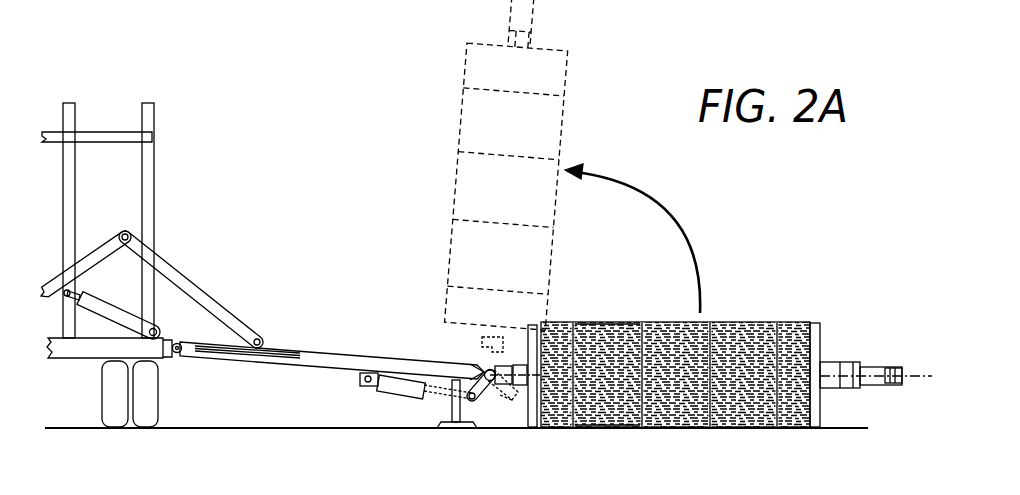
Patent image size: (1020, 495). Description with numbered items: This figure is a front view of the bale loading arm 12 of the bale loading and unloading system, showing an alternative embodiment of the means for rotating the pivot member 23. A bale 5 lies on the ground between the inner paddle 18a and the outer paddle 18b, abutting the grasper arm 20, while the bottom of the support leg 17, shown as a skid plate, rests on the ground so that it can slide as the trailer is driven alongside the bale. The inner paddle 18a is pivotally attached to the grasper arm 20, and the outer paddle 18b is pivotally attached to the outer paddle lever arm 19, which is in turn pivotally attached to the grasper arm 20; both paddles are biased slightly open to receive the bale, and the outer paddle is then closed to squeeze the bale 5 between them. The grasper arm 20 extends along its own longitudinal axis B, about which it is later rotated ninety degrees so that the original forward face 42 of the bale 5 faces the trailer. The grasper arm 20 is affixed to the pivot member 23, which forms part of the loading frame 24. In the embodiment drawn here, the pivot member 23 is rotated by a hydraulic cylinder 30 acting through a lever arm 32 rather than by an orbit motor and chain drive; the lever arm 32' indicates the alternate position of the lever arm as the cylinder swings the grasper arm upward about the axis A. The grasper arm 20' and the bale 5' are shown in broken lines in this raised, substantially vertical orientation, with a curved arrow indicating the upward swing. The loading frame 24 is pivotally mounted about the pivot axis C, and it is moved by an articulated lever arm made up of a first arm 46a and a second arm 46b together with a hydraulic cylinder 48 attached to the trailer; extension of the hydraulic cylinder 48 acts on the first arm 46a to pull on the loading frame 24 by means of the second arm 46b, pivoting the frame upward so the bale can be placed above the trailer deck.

The bale 5 is at (675, 399).
The bale 5' is at (493, 165).
The bale loading arm 12 is at (333, 363).
The support leg 17 is at (457, 412).
The inner paddle 18a is at (534, 412).
The outer paddle 18b is at (815, 405).
The outer paddle lever arm 19 is at (876, 380).
The grasper arm 20 is at (511, 338).
The grasper arm 20' is at (445, 319).
The pivot member 23 is at (480, 367).
The loading frame 24 is at (285, 360).
The hydraulic cylinder 30 is at (382, 391).
The lever arm 32 is at (466, 429).
The lever arm 32' is at (525, 430).
The forward face 42 is at (740, 410).
The first arm 46a is at (110, 246).
The second arm 46b is at (200, 297).
The hydraulic cylinder 48 is at (108, 312).
The axis A is at (488, 369).
The longitudinal axis B is at (918, 375).
The pivot axis C is at (179, 355).